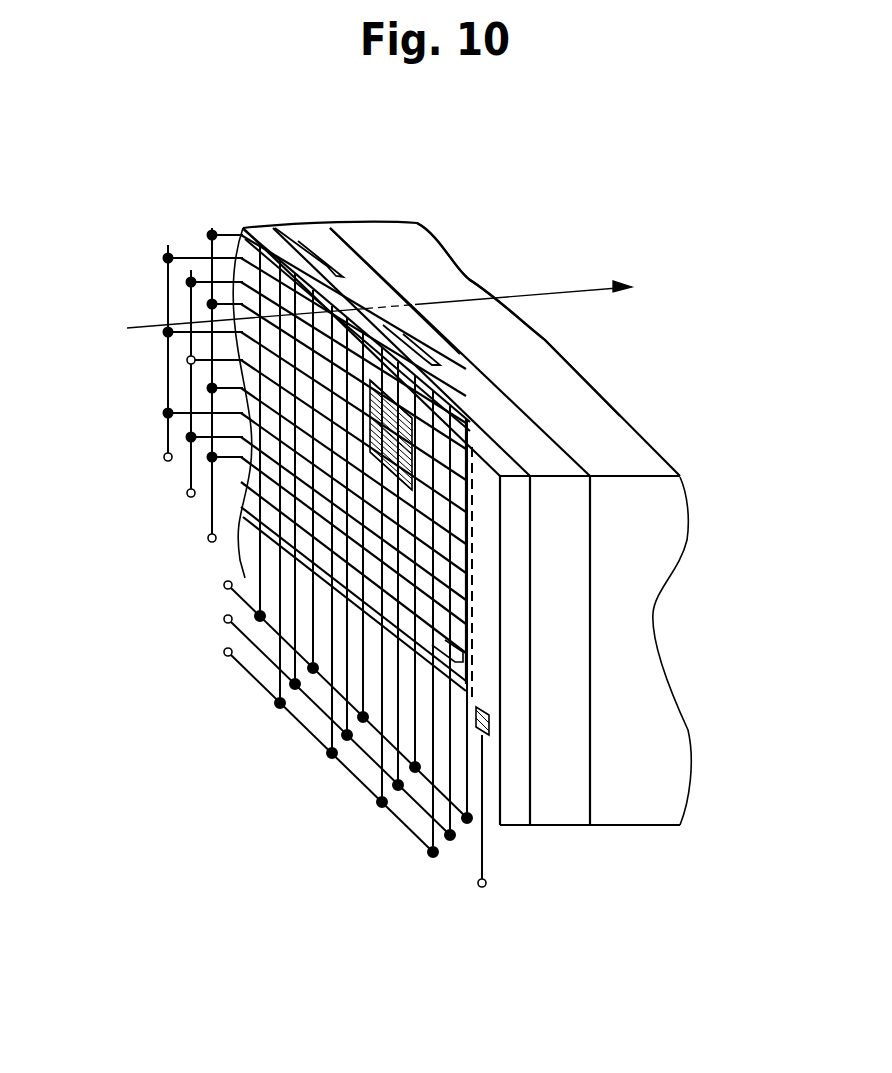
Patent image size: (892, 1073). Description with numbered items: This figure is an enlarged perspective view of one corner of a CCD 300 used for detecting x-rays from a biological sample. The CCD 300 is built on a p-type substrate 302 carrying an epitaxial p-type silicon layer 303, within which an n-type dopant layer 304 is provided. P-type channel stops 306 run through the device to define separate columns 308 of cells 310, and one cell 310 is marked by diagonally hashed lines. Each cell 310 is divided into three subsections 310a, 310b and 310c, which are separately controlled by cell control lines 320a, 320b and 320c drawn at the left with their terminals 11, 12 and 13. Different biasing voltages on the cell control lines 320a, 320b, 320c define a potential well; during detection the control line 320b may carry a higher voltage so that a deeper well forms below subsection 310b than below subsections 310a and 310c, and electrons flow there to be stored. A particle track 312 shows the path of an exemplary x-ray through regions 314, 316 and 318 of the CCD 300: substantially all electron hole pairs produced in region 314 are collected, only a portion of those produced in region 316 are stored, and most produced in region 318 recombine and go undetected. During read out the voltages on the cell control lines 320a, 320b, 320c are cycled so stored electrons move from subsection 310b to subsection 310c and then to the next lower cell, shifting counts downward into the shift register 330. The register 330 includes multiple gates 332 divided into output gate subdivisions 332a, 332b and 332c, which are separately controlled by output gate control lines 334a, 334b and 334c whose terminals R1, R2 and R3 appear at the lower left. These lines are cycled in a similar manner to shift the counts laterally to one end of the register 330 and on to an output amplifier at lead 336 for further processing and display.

The CCD 300 is at (735, 222).
The p-type substrate 302 is at (403, 222).
The epitaxial p-type silicon layer 303 is at (333, 216).
The n-type dopant layer 304 is at (243, 230).
The p-type channel stops 306 is at (440, 390).
The columns 308 is at (312, 244).
The cell 310 is at (481, 462).
The subsection 310a is at (410, 470).
The subsection 310b is at (412, 480).
The subsection 310c is at (416, 490).
The particle track 312 is at (346, 269).
The region 314 is at (383, 250).
The region 316 is at (400, 290).
The region 318 is at (467, 288).
The cell control line 320a is at (157, 369).
The cell control line 320b is at (157, 400).
The cell control line 320c is at (157, 402).
The terminal 11 is at (201, 369).
The terminal 12 is at (212, 400).
The terminal 13 is at (224, 402).
The row terminal R1 is at (340, 567).
The row terminal R2 is at (333, 559).
The row terminal R3 is at (336, 534).
The shift register 330 is at (490, 700).
The gates 332 is at (478, 655).
The output gate subdivision 332a is at (433, 677).
The output gate subdivision 332b is at (467, 707).
The output gate subdivision 332c is at (480, 702).
The output gate control line 334a is at (302, 567).
The output gate control line 334b is at (296, 559).
The output gate control line 334c is at (298, 534).
The lead 336 is at (518, 825).